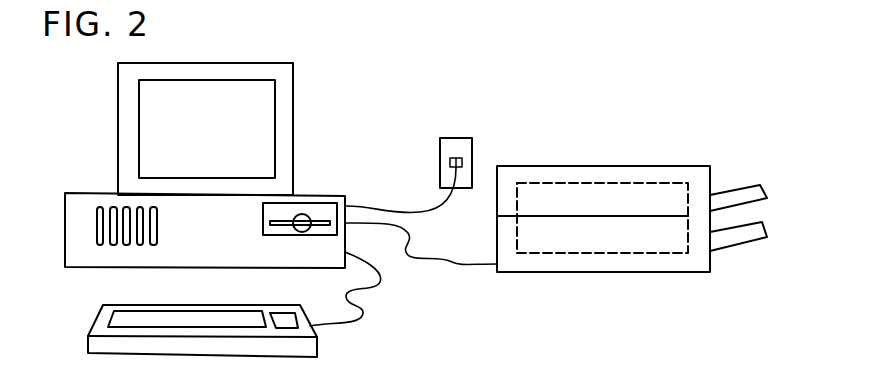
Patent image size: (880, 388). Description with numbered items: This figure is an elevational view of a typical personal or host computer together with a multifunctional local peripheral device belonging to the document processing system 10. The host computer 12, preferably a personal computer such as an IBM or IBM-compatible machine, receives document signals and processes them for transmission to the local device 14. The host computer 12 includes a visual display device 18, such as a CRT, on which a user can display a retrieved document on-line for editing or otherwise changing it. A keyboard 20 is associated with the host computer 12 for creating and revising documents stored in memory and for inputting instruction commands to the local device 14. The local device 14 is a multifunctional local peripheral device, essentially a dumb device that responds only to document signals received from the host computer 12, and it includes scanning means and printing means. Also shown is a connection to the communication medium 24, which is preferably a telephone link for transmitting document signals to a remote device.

The document processing system 10 is at (467, 109).
The host computer 12 is at (305, 195).
The local device 14 is at (563, 165).
The visual display device 18 is at (259, 113).
The keyboard 20 is at (123, 316).
The communication medium 24 is at (440, 157).